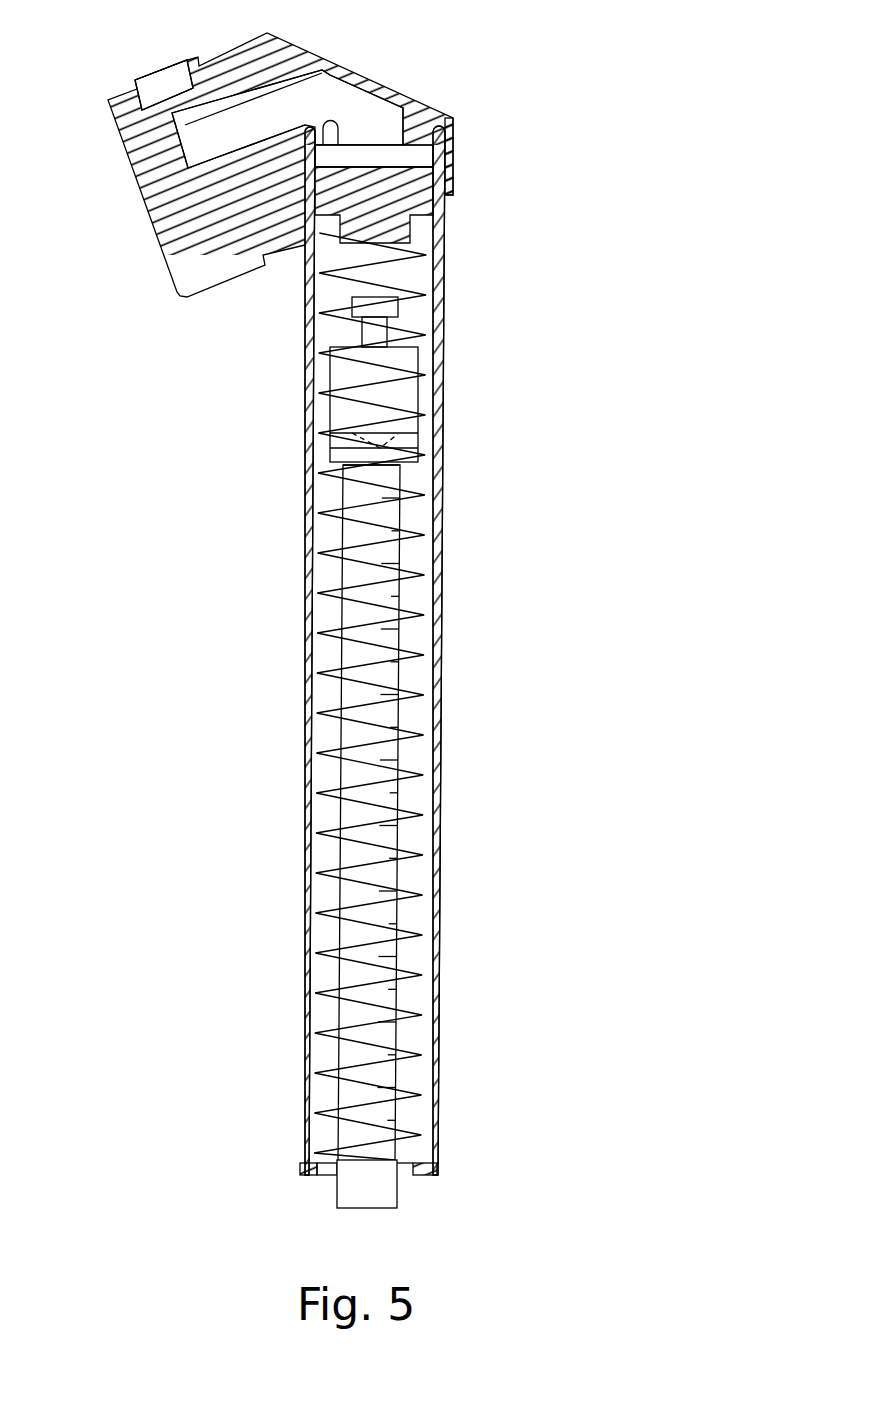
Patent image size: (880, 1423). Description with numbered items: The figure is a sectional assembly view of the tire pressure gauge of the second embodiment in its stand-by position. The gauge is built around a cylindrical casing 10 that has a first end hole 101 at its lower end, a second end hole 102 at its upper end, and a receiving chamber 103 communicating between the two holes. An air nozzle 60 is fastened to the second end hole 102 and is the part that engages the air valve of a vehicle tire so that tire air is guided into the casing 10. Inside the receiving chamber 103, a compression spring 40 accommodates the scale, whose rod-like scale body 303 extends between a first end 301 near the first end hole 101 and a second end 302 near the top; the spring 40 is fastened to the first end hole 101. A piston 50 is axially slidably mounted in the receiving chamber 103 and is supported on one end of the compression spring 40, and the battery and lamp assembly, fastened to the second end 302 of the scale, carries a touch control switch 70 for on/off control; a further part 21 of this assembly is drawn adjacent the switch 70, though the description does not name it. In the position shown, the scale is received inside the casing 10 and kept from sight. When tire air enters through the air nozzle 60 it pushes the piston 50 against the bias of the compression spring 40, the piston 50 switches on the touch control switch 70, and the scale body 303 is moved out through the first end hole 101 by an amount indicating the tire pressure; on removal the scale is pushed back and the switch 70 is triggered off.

The cylindrical casing 10 is at (307, 622).
The air nozzle 60 is at (150, 70).
The second end hole 102 is at (447, 130).
The piston 50 is at (417, 193).
The touch control switch 70 is at (418, 393).
The seal ring 21 is at (418, 440).
The second end 302 is at (400, 478).
The compression spring 40 is at (444, 814).
The rod-like scale body 303 is at (405, 720).
The receiving chamber 103 is at (318, 813).
The first end hole 101 is at (313, 1175).
The first end 301 is at (373, 1208).